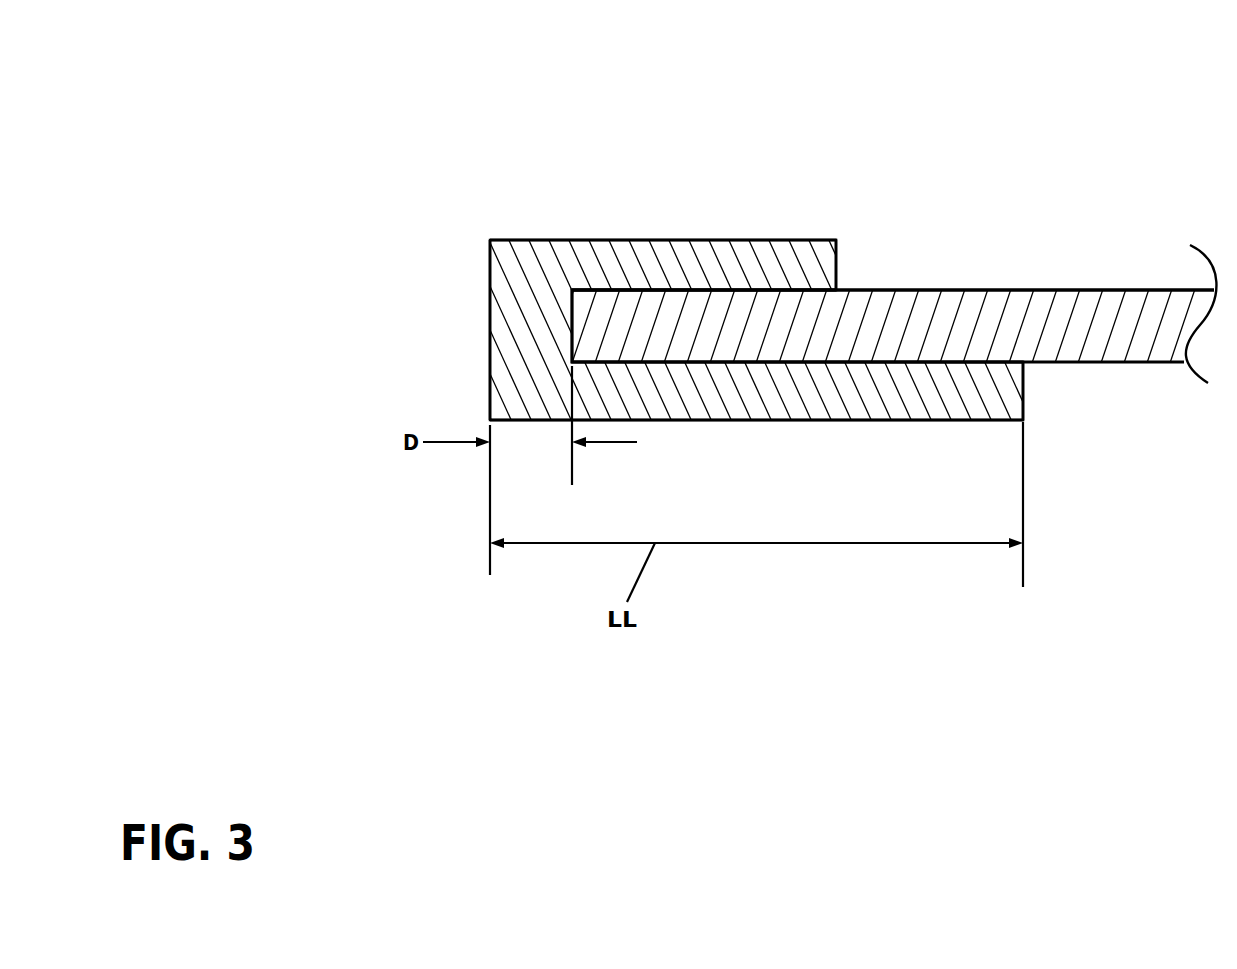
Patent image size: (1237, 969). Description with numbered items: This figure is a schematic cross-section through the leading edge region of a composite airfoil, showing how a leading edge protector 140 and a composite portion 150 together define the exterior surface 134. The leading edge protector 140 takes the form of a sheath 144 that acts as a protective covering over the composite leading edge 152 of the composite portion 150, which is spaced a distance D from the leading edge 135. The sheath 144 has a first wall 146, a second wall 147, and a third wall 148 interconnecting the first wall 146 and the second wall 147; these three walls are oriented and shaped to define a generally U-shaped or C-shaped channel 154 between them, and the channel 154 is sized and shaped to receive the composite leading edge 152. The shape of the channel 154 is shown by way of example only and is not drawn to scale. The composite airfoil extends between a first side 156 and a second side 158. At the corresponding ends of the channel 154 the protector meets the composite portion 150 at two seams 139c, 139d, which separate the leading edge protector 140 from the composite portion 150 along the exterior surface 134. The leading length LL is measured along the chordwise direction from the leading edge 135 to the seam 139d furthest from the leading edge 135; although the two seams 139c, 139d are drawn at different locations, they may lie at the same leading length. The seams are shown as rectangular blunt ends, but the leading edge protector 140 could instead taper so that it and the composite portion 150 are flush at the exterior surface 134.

The exterior surface 134 is at (923, 292).
The leading edge 135 is at (490, 328).
The seam 139c is at (837, 290).
The seam 139d is at (1023, 363).
The leading edge protector 140 is at (531, 273).
The sheath 144 is at (750, 330).
The first wall 146 is at (672, 267).
The second wall 147 is at (757, 398).
The third wall 148 is at (528, 345).
The composite portion 150 is at (965, 327).
The composite leading edge 152 is at (577, 315).
The channel 154 is at (647, 288).
The first side 156 is at (789, 226).
The second side 158 is at (860, 432).